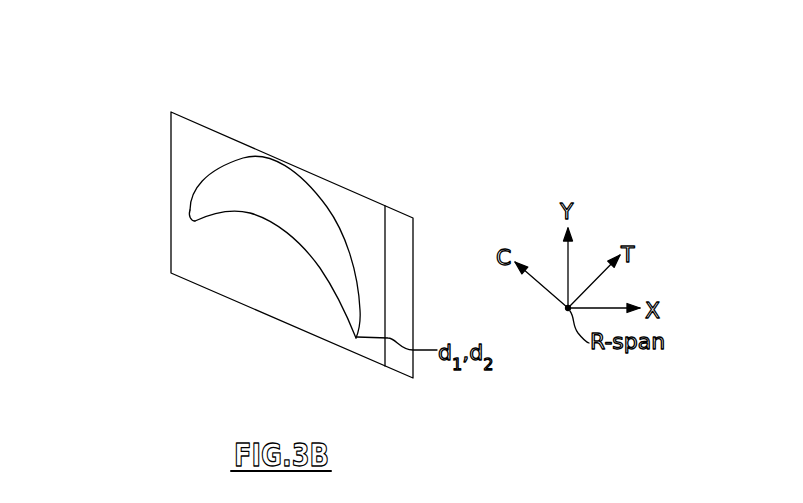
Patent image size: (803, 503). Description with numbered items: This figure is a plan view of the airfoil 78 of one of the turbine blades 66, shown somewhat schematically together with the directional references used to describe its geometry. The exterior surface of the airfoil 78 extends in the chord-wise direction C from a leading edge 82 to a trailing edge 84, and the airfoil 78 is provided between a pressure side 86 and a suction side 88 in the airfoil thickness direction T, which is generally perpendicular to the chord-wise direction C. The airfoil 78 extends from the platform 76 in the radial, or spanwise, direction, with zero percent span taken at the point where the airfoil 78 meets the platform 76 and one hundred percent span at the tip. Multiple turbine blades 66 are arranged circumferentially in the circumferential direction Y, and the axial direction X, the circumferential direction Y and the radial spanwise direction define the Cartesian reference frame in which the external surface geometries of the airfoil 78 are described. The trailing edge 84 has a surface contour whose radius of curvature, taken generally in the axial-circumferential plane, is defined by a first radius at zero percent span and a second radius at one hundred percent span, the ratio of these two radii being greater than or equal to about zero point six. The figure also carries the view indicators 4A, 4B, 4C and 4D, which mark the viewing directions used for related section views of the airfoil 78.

The turbine blades 66 is at (274, 252).
The platform 76 is at (222, 132).
The airfoil 78 is at (198, 220).
The leading edge 82 is at (190, 210).
The trailing edge 84 is at (355, 330).
The pressure side 86 is at (283, 233).
The suction side 88 is at (295, 173).
The view direction 4A is at (152, 275).
The view direction 4B is at (242, 333).
The view direction 4C is at (402, 185).
The view direction 4D is at (348, 120).